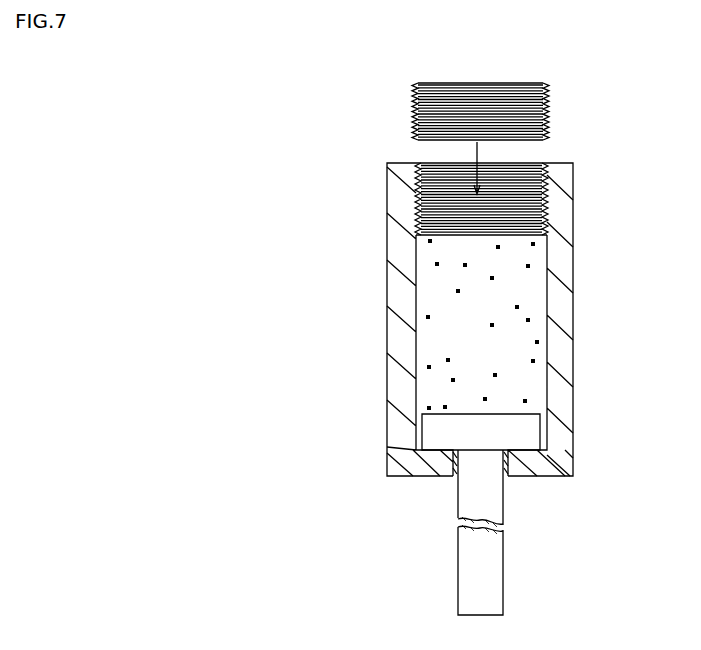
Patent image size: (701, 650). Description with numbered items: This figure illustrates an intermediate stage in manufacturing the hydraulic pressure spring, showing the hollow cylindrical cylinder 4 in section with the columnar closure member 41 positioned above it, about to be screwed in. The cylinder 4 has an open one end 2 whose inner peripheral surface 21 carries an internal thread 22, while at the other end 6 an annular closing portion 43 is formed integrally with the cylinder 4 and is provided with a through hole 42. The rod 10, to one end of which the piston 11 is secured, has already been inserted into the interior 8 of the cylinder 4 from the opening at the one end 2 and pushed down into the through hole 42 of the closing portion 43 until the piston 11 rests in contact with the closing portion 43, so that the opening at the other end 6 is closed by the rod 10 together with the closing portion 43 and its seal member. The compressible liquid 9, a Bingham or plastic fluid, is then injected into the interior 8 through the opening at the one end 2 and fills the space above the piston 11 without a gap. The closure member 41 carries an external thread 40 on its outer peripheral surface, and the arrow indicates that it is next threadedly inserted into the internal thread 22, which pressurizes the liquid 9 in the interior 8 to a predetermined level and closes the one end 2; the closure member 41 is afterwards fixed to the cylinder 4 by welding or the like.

The one end 2 is at (563, 186).
The cylinder 4 is at (395, 303).
The other end 6 is at (400, 456).
The interior 8 is at (520, 335).
The compressible liquid 9 is at (426, 366).
The rod 10 is at (492, 577).
The piston 11 is at (530, 430).
The inner peripheral surface 21 is at (548, 278).
The internal thread 22 is at (419, 205).
The external thread 40 is at (457, 110).
The closure member 41 is at (550, 118).
The through hole 42 is at (506, 462).
The closing portion 43 is at (433, 466).